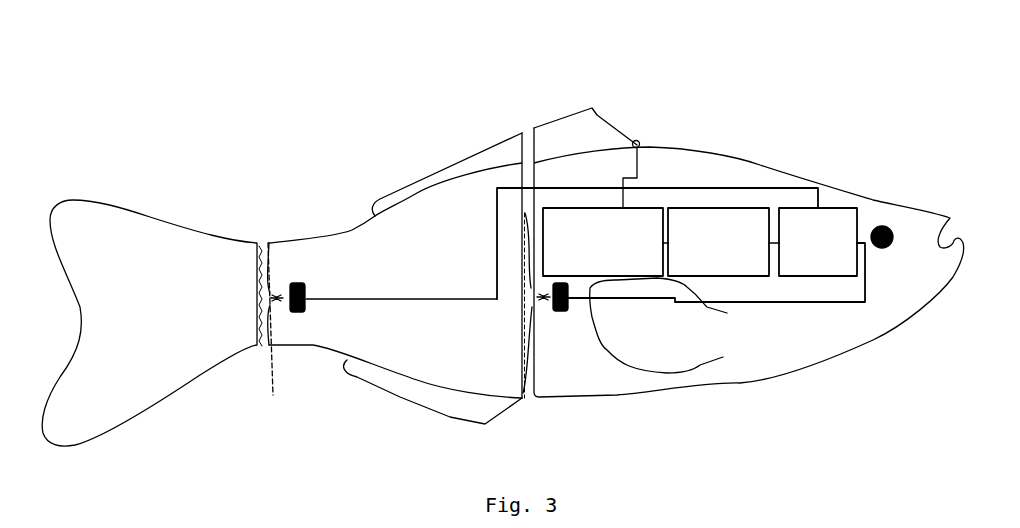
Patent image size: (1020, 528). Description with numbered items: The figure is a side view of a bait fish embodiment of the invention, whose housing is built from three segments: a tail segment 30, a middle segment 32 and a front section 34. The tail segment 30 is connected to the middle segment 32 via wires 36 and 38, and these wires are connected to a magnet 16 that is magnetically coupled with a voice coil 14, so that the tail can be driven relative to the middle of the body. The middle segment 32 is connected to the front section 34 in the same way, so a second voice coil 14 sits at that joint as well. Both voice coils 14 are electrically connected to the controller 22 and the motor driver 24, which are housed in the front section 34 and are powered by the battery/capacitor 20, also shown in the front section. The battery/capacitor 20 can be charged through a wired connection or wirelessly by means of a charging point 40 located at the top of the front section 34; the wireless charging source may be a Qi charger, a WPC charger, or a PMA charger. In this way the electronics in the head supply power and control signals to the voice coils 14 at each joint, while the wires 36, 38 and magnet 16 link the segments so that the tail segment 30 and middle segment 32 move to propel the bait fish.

The voice coil 14 is at (300, 312).
The magnet 16 is at (278, 293).
The battery/capacitor 20 is at (615, 268).
The controller 22 is at (727, 265).
The motor driver 24 is at (820, 267).
The tail segment 30 is at (165, 268).
The middle segment 32 is at (368, 245).
The front section 34 is at (727, 165).
The wire 36 is at (267, 243).
The wire 38 is at (281, 335).
The charging point 40 is at (638, 145).